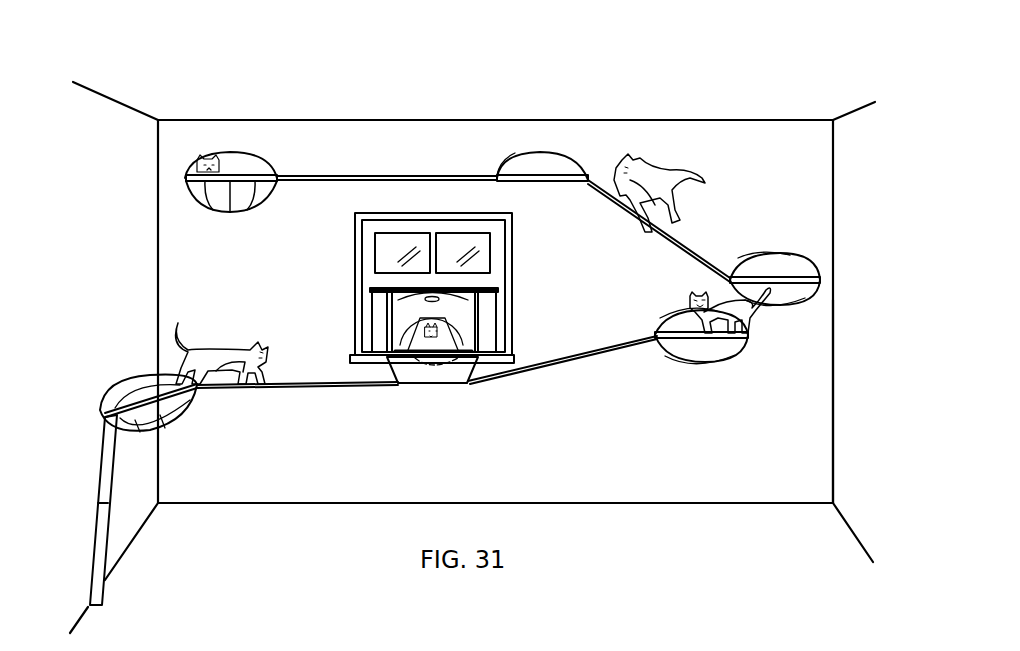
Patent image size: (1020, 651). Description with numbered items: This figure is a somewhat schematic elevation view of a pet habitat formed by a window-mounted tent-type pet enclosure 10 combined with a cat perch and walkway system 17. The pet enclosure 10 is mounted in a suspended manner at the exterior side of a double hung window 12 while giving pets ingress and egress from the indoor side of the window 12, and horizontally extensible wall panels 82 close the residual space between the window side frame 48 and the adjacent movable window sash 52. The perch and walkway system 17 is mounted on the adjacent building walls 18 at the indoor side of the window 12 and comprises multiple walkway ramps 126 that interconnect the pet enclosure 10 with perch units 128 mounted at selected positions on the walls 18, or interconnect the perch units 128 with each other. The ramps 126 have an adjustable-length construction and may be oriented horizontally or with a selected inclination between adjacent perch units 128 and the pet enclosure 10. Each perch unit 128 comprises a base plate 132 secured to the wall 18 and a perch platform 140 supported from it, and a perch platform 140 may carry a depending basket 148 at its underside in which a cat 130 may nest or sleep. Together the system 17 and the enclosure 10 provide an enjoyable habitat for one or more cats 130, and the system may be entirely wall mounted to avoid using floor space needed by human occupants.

The pet enclosure 10 is at (422, 385).
The window 12 is at (355, 269).
The perch and walkway system 17 is at (786, 157).
The wall 18 is at (818, 386).
The window side frame 48 is at (512, 271).
The window sash 52 is at (396, 243).
The wall panel 82 is at (372, 328).
The walkway ramp 126 is at (343, 175).
The perch unit 128 is at (471, 246).
The cat 130 is at (236, 345).
The base plate 132 is at (190, 162).
The perch platform 140 is at (258, 177).
The basket 148 is at (226, 206).